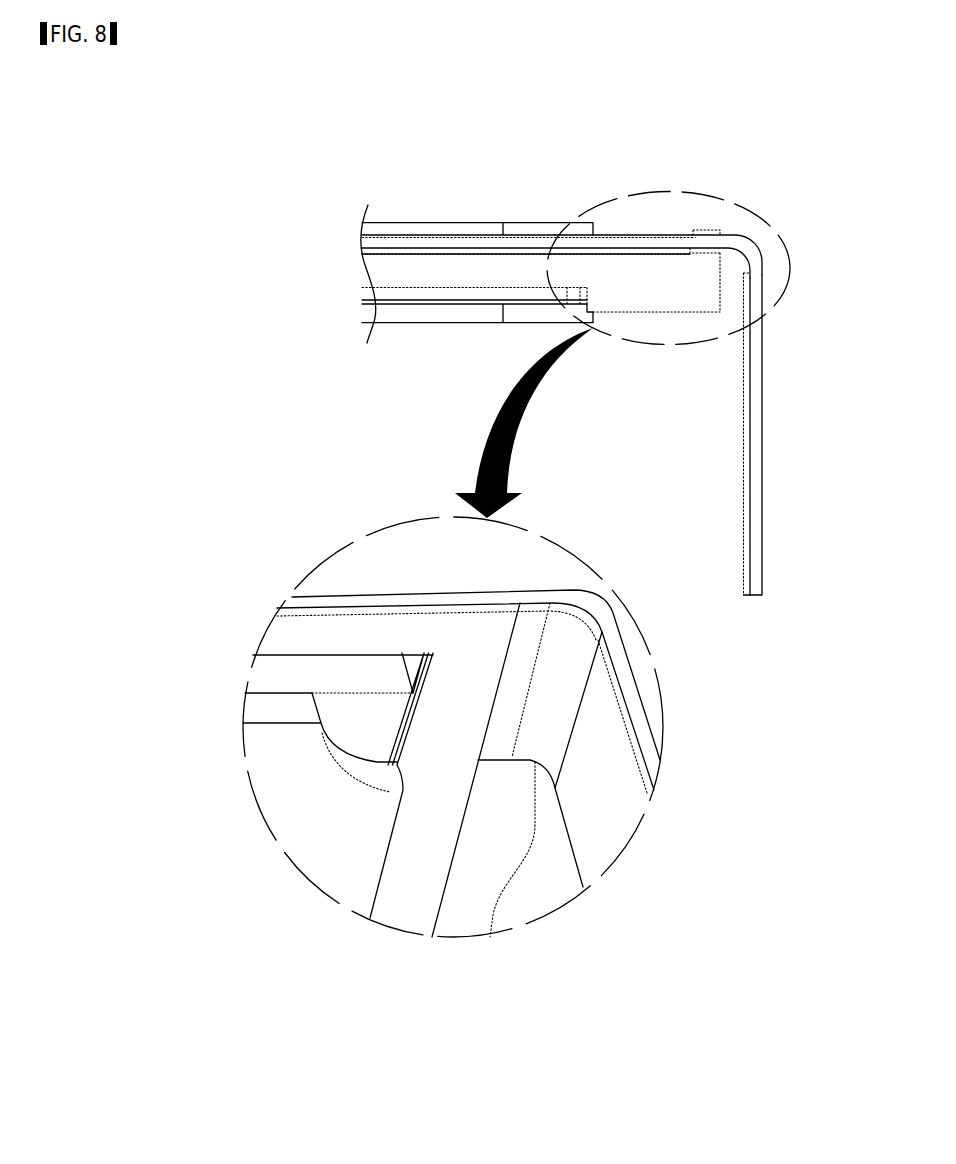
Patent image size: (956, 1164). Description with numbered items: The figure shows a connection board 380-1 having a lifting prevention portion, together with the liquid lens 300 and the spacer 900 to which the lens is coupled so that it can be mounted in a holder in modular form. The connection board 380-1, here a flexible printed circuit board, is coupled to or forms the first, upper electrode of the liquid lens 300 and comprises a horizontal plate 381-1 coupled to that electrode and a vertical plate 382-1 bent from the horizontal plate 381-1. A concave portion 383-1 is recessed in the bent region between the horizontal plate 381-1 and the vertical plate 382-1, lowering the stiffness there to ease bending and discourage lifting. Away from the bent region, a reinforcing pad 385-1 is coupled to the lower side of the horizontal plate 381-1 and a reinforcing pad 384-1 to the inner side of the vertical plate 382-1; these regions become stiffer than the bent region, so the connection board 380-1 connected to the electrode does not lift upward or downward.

The spacer 900 is at (393, 272).
The liquid lens 300 is at (393, 317).
The connection board 380-1 is at (764, 347).
The horizontal plate 381-1 is at (660, 240).
The vertical plate 382-1 is at (757, 512).
The concave portion 383-1 is at (757, 253).
The reinforcing pad 384-1 is at (748, 468).
The reinforcing pad 385-1 is at (278, 633).